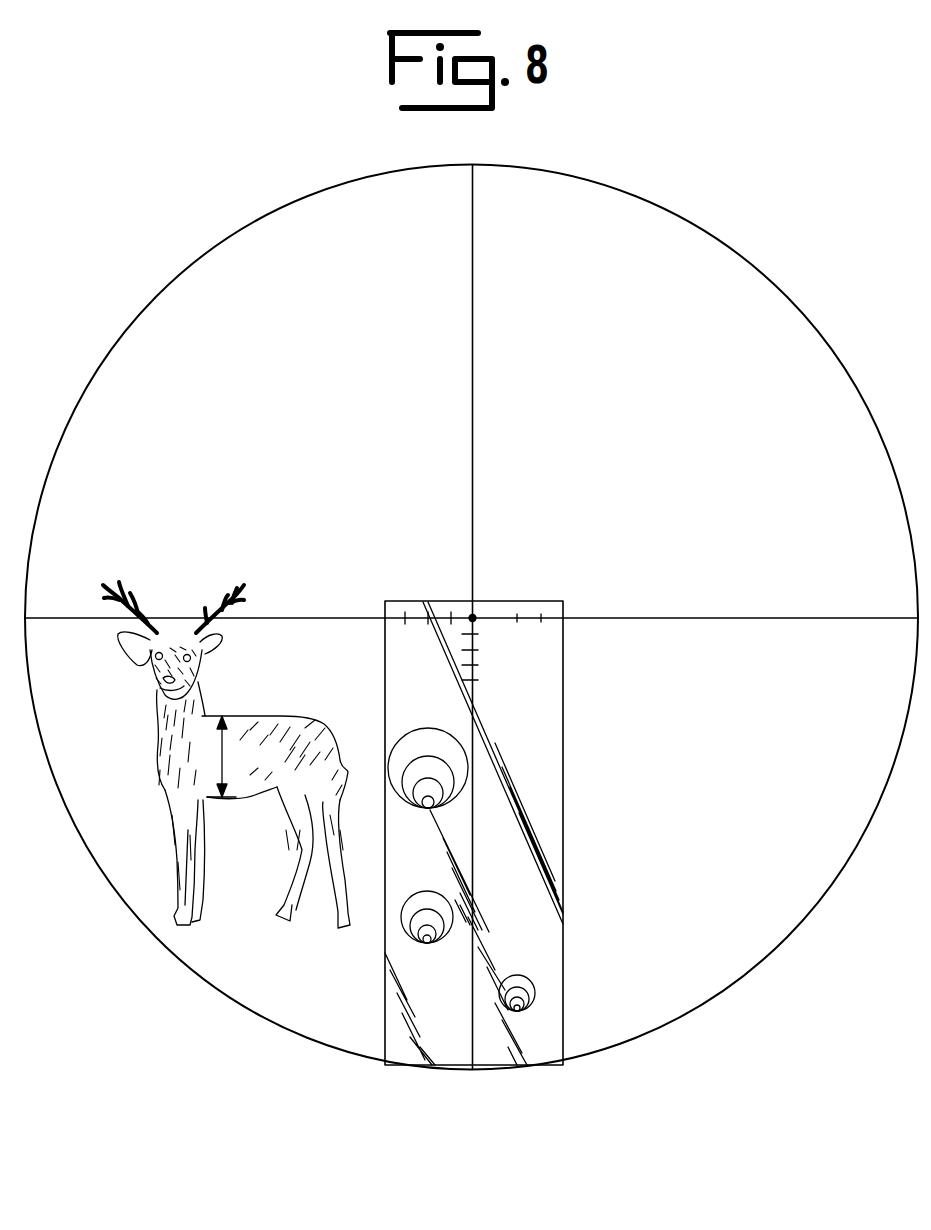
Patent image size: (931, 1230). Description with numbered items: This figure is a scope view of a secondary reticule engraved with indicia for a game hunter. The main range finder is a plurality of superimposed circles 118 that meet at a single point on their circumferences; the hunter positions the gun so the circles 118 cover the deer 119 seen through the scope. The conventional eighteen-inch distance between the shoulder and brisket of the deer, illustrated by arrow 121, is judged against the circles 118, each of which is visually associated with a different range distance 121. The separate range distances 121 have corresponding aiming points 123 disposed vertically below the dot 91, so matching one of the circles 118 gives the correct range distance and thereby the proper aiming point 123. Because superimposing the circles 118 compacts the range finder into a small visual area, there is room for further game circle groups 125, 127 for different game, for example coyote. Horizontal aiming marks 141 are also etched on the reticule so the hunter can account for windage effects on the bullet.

The dot 91 is at (473, 617).
The horizontal aiming marks 141 is at (428, 616).
The aiming points 123 is at (464, 650).
The superimposed circles 118 is at (406, 731).
The deer 119 is at (272, 716).
The arrow (range distances) 121 is at (228, 767).
The game circle group 125 is at (405, 929).
The game circle group 127 is at (522, 1006).